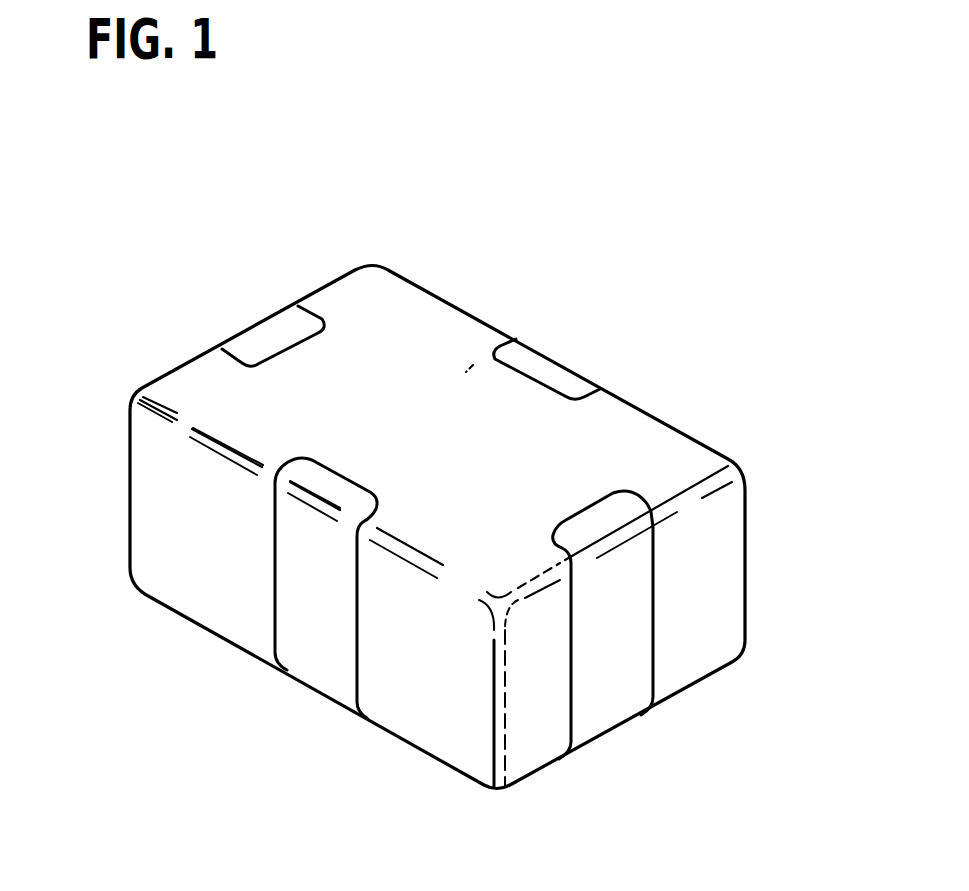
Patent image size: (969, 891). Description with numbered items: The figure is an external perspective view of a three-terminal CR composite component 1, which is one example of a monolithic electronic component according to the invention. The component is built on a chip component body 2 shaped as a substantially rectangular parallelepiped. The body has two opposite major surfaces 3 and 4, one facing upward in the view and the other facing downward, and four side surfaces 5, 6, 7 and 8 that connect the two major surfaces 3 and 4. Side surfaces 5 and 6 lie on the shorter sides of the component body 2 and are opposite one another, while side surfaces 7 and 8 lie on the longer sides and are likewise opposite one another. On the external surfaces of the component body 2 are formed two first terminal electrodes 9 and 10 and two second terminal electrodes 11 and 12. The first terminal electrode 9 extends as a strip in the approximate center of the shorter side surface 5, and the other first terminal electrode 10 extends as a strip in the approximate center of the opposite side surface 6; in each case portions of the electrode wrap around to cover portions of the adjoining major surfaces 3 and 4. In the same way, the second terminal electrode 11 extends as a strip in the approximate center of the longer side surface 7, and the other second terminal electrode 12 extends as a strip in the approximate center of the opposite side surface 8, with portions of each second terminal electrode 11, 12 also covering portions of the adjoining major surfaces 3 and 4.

The three-terminal CR composite component 1 is at (139, 114).
The chip component body 2 is at (655, 403).
The major surface 3 is at (440, 393).
The major surface 4 is at (400, 707).
The side surface 5 is at (700, 625).
The side surface 6 is at (166, 471).
The side surface 7 is at (473, 365).
The side surface 8 is at (225, 593).
The first terminal electrode 9 is at (630, 699).
The first terminal electrode 10 is at (242, 322).
The second terminal electrode 11 is at (588, 362).
The second terminal electrode 12 is at (295, 691).